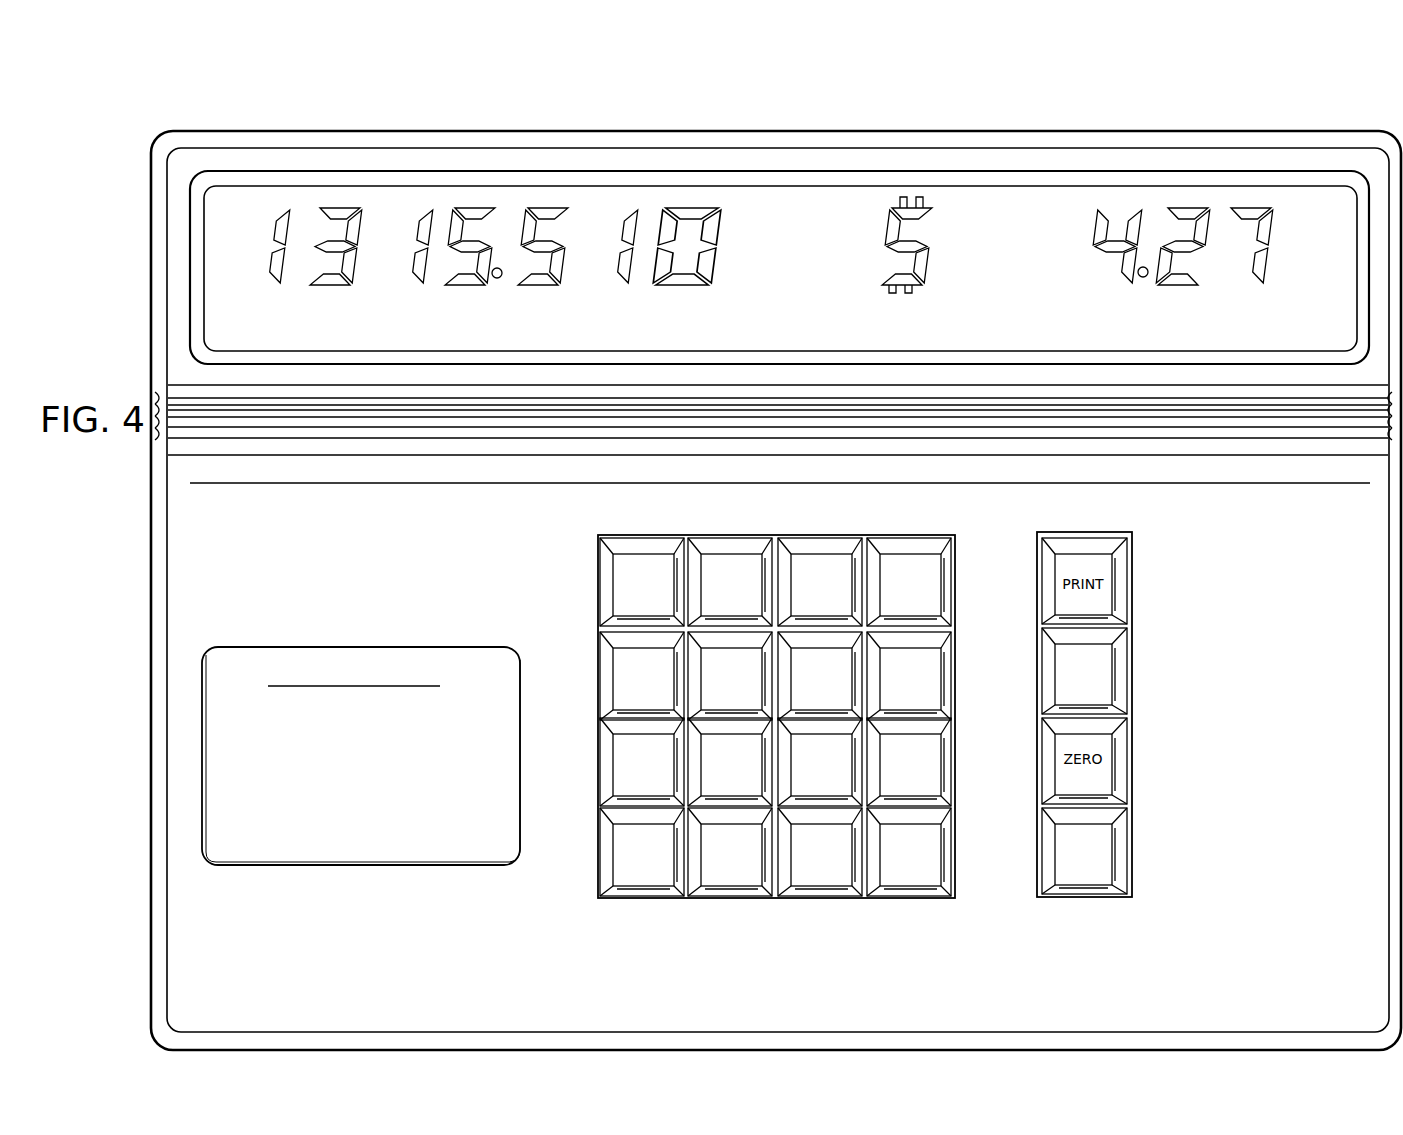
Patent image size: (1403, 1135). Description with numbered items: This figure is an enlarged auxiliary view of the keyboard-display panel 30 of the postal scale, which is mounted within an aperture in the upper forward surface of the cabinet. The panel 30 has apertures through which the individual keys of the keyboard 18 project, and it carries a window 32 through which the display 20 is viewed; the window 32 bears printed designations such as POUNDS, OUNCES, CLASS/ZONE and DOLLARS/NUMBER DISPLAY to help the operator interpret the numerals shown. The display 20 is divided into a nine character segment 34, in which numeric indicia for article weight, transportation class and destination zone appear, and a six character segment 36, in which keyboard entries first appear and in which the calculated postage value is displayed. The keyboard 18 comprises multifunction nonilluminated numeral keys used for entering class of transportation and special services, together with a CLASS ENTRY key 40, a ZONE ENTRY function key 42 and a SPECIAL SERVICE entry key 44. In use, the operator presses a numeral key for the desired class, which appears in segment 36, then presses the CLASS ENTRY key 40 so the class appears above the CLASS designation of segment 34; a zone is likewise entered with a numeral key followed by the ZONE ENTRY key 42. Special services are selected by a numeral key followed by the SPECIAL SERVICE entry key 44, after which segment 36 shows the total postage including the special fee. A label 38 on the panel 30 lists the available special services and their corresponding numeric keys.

The keyboard 18 is at (752, 717).
The display 20 is at (779, 327).
The keyboard-display panel 30 is at (208, 980).
The window 32 is at (850, 330).
The nine character segment 34 is at (515, 340).
The six character segment 36 is at (1036, 337).
The label 38 is at (518, 862).
The CLASS ENTRY key 40 is at (752, 697).
The ZONE ENTRY function key 42 is at (950, 673).
The SPECIAL SERVICE entry key 44 is at (950, 770).